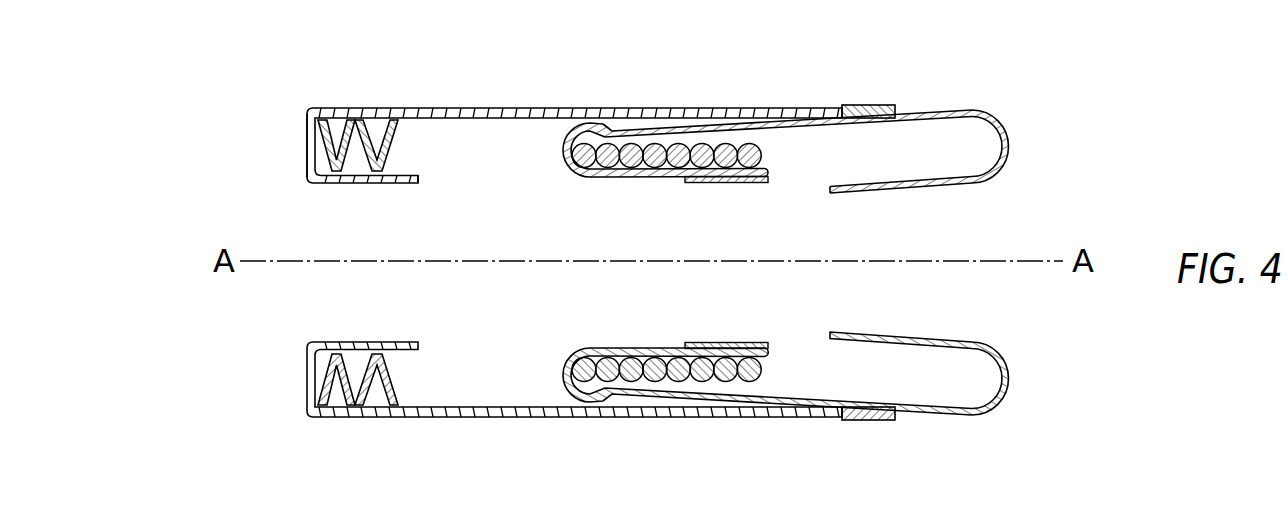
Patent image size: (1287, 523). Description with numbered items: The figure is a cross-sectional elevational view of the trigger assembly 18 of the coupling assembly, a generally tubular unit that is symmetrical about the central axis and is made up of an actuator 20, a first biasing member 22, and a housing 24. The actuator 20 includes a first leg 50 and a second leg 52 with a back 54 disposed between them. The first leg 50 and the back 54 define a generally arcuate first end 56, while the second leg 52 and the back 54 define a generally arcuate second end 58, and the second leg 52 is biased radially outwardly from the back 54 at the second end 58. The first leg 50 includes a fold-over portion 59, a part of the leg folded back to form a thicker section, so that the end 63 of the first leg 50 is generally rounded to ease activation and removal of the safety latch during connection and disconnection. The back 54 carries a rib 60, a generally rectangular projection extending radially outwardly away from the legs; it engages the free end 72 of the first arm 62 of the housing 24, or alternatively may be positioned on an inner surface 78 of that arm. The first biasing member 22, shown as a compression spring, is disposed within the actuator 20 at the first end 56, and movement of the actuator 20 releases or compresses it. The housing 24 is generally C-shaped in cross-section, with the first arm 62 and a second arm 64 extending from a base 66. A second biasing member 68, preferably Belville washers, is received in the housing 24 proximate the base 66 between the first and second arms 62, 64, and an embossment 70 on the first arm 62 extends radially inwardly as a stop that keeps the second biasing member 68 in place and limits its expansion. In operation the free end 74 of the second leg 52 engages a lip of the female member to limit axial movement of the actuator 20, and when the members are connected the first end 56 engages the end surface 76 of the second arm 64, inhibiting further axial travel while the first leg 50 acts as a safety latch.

The trigger assembly 18 is at (760, 57).
The actuator 20 is at (973, 107).
The first biasing member 22 is at (762, 153).
The housing 24 is at (510, 88).
The first leg 50 is at (613, 178).
The second leg 52 is at (903, 188).
The back 54 is at (830, 125).
The first end 56 is at (563, 155).
The second end 58 is at (1007, 133).
The fold-over portion 59 is at (748, 184).
The rib 60 is at (866, 105).
The first arm 62 is at (438, 115).
The end 63 is at (767, 181).
The second arm 64 is at (343, 181).
The base 66 is at (310, 149).
The second biasing member 68 is at (391, 149).
The embossment 70 is at (403, 122).
The free end 72 is at (840, 118).
The free end 74 is at (830, 191).
The end surface 76 is at (420, 179).
The inner surface 78 is at (555, 126).